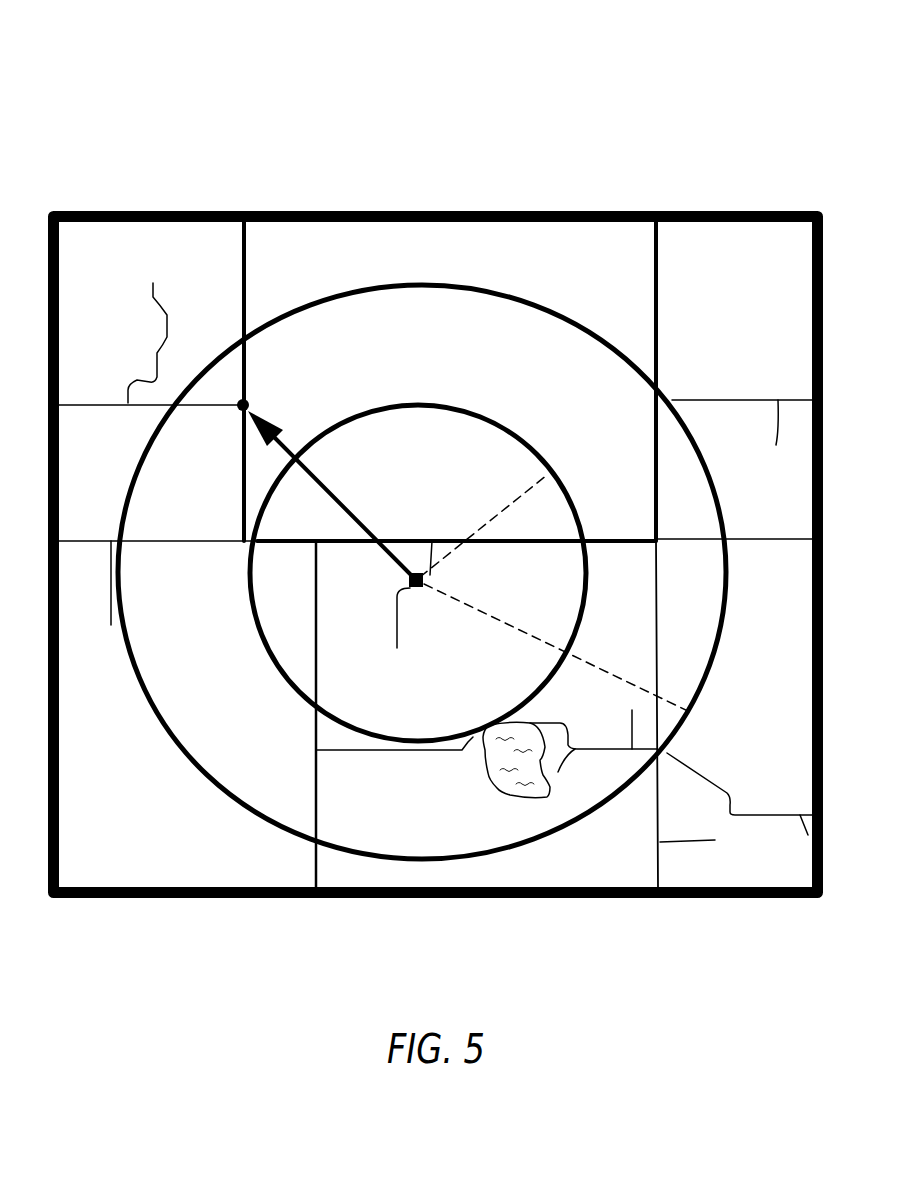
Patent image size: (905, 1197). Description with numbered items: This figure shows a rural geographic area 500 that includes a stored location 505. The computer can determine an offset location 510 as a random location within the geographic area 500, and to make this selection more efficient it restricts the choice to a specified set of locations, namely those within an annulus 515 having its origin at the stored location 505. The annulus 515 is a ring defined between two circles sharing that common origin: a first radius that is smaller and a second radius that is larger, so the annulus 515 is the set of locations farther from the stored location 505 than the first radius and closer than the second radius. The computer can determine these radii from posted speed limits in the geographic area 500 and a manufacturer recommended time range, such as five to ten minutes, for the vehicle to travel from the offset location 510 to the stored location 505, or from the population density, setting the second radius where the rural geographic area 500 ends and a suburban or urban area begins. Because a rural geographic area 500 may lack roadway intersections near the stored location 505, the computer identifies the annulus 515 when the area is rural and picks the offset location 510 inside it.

The geographic area 500 is at (768, 38).
The stored location 505 is at (415, 590).
The offset location 510 is at (249, 401).
The annulus 515 is at (448, 326).